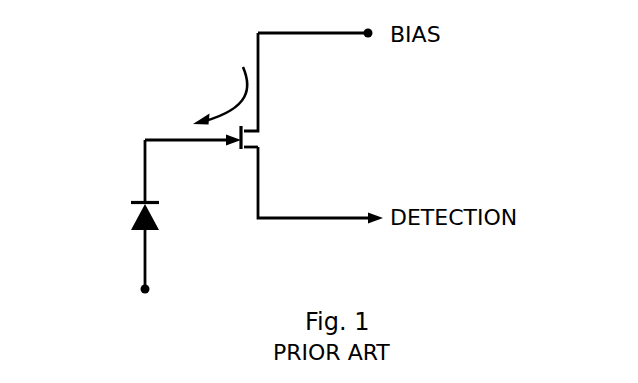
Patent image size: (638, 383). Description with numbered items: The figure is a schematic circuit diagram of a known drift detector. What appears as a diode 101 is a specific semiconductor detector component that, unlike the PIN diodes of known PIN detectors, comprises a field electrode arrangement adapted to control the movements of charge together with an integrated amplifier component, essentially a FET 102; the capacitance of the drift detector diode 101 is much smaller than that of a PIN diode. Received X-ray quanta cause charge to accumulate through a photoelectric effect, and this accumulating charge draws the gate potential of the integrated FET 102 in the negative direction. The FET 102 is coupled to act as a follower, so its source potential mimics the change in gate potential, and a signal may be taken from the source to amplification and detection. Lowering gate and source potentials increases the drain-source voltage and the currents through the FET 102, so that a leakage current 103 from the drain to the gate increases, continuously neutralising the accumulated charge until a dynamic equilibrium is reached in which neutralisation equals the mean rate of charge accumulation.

The diode 101 is at (135, 212).
The FET 102 is at (250, 148).
The leakage current 103 is at (236, 102).